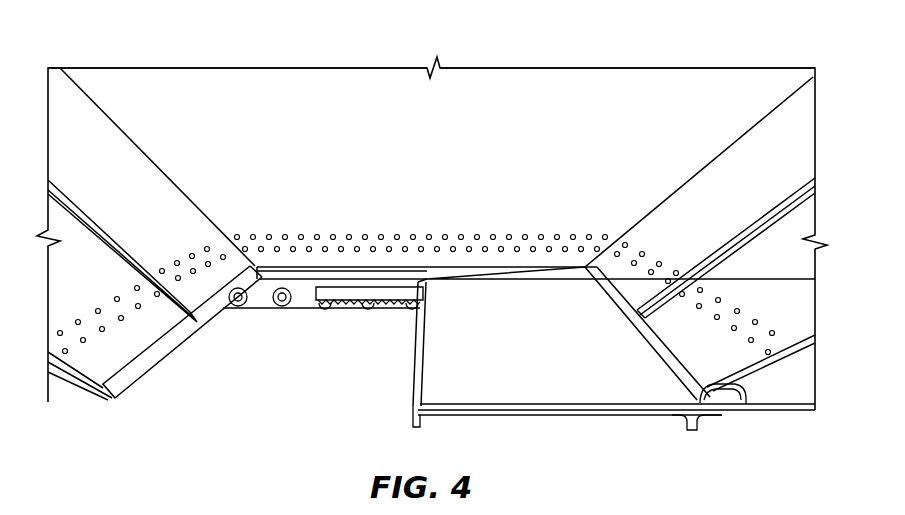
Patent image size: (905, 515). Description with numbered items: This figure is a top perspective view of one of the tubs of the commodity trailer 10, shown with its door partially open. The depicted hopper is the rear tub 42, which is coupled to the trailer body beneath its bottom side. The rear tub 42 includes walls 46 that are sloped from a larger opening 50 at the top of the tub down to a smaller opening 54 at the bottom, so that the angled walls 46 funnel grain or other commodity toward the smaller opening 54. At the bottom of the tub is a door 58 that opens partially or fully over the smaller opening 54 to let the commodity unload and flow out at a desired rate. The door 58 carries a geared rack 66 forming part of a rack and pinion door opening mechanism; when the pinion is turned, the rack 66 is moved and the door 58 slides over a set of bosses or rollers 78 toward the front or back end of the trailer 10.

The commodity trailer 10 is at (186, 49).
The rear tub 42 is at (701, 114).
The walls 46 is at (87, 157).
The larger opening 50 is at (530, 88).
The smaller opening 54 is at (219, 398).
The door 58 is at (577, 382).
The geared rack 66 is at (390, 292).
The rollers 78 is at (312, 300).